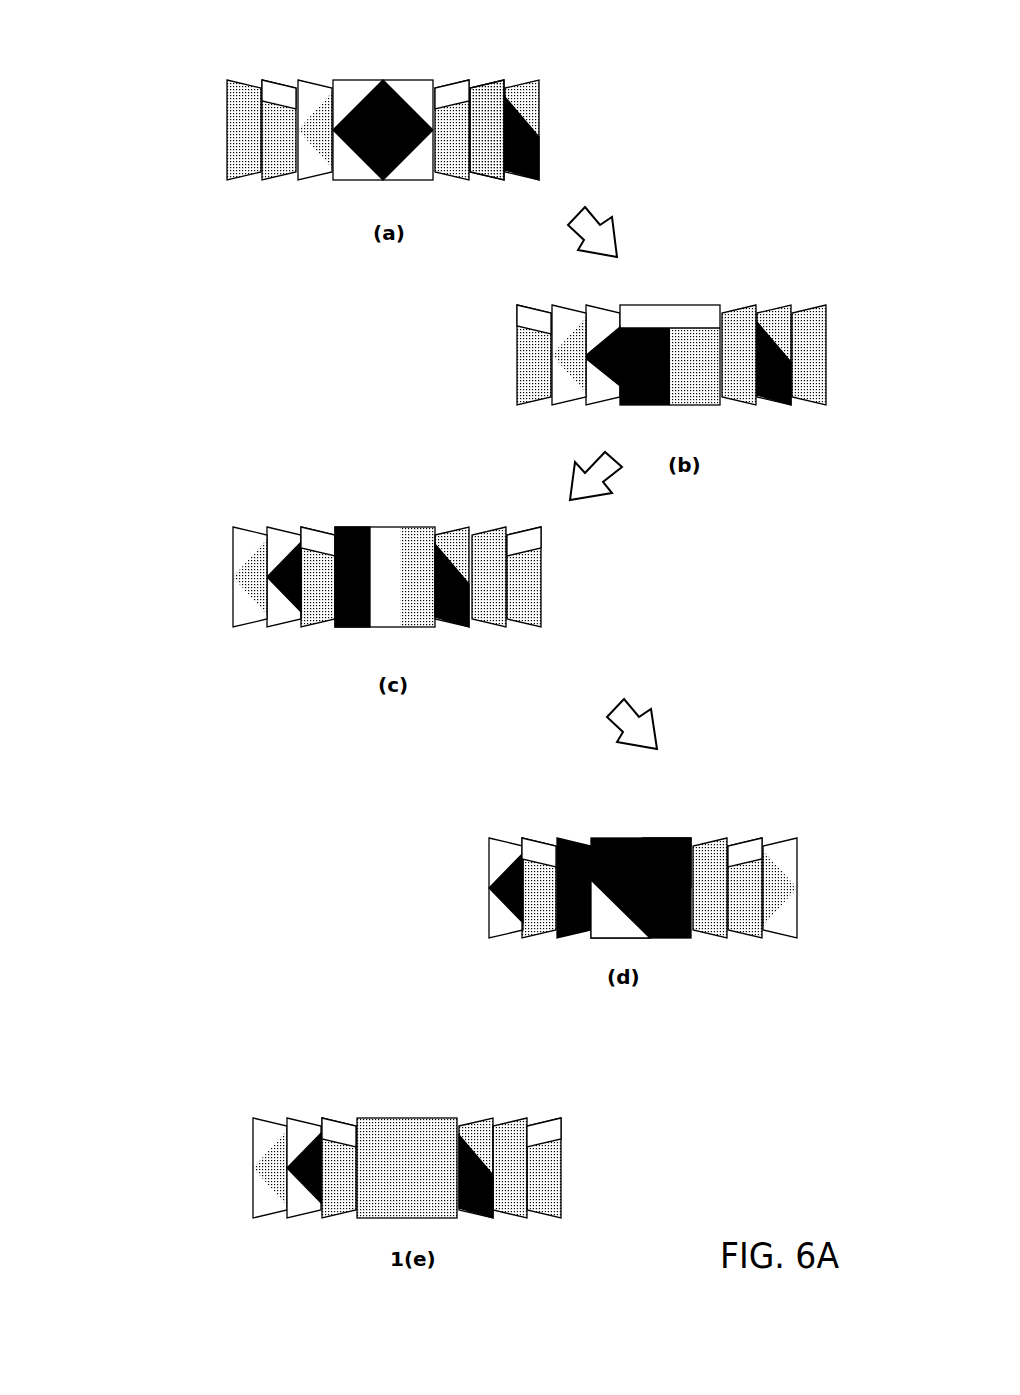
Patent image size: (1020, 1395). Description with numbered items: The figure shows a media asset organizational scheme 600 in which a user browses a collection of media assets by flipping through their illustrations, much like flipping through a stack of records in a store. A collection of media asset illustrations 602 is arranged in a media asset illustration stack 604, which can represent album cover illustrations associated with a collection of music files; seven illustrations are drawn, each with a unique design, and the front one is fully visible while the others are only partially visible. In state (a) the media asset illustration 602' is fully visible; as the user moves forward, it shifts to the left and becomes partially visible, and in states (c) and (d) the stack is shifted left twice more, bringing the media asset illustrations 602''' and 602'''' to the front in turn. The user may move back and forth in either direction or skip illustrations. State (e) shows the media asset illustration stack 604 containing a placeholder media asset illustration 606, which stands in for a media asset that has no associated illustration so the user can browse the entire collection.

The media asset organizational scheme 600 is at (84, 70).
The media asset illustrations 602 is at (474, 471).
The media asset illustration 602' is at (526, 471).
The media asset illustration 602''' is at (581, 497).
The media asset illustration 602'''' is at (704, 475).
The media asset illustration stack 604 is at (507, 644).
The placeholder media asset illustration 606 is at (400, 1117).